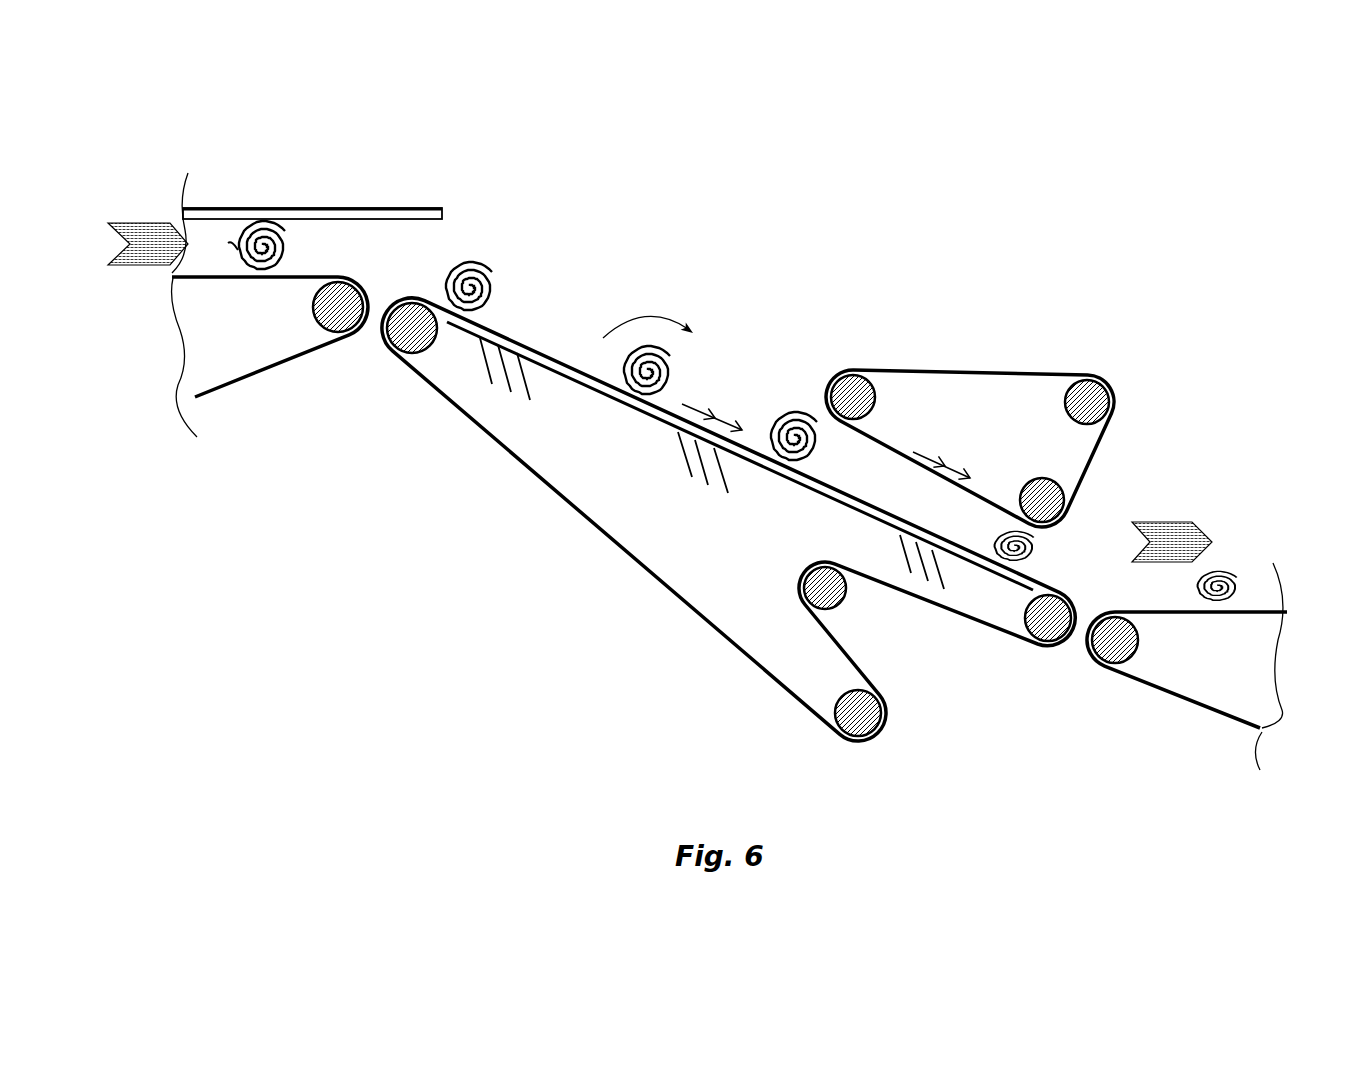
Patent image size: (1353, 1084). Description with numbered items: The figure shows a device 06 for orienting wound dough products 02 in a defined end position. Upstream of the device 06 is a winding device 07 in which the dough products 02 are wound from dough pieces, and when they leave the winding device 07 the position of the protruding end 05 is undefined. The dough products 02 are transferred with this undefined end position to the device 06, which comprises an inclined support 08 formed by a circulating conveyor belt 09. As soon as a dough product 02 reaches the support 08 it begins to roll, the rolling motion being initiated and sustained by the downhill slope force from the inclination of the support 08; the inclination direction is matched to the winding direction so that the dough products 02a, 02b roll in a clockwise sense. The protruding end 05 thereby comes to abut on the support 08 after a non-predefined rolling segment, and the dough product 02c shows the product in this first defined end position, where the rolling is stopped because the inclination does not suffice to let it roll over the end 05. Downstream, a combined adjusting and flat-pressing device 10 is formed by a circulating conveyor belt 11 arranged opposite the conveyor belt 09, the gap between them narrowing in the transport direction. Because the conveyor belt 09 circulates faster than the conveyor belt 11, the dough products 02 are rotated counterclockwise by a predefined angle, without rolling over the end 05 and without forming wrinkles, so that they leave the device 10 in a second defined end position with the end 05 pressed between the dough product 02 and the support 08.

The dough product 02 is at (291, 226).
The dough product 02a is at (497, 287).
The dough product 02b is at (673, 367).
The dough product 02c is at (785, 410).
The end 05 is at (226, 226).
The device 06 is at (1187, 217).
The winding device 07 is at (280, 508).
The inclined support 08 is at (556, 346).
The conveyor belt 09 is at (547, 490).
The adjusting and flat-pressing device 10 is at (925, 294).
The conveyor belt 11 is at (1012, 367).